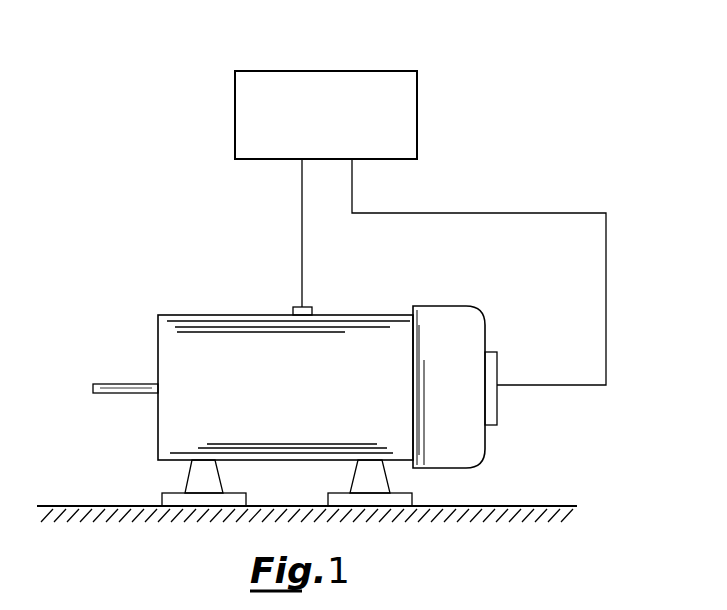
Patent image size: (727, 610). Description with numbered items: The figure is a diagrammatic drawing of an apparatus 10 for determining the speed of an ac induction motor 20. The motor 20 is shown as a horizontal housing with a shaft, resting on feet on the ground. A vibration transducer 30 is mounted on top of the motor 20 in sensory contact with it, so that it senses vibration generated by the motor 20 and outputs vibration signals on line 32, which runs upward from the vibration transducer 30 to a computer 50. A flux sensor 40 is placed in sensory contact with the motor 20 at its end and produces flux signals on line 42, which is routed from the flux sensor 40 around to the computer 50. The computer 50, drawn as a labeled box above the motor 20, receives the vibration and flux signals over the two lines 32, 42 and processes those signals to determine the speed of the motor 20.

The apparatus 10 is at (515, 132).
The ac induction motor 20 is at (197, 315).
The vibration transducer 30 is at (314, 308).
The line 32 is at (302, 258).
The flux sensor 40 is at (497, 410).
The line 42 is at (607, 236).
The computer 50 is at (353, 70).